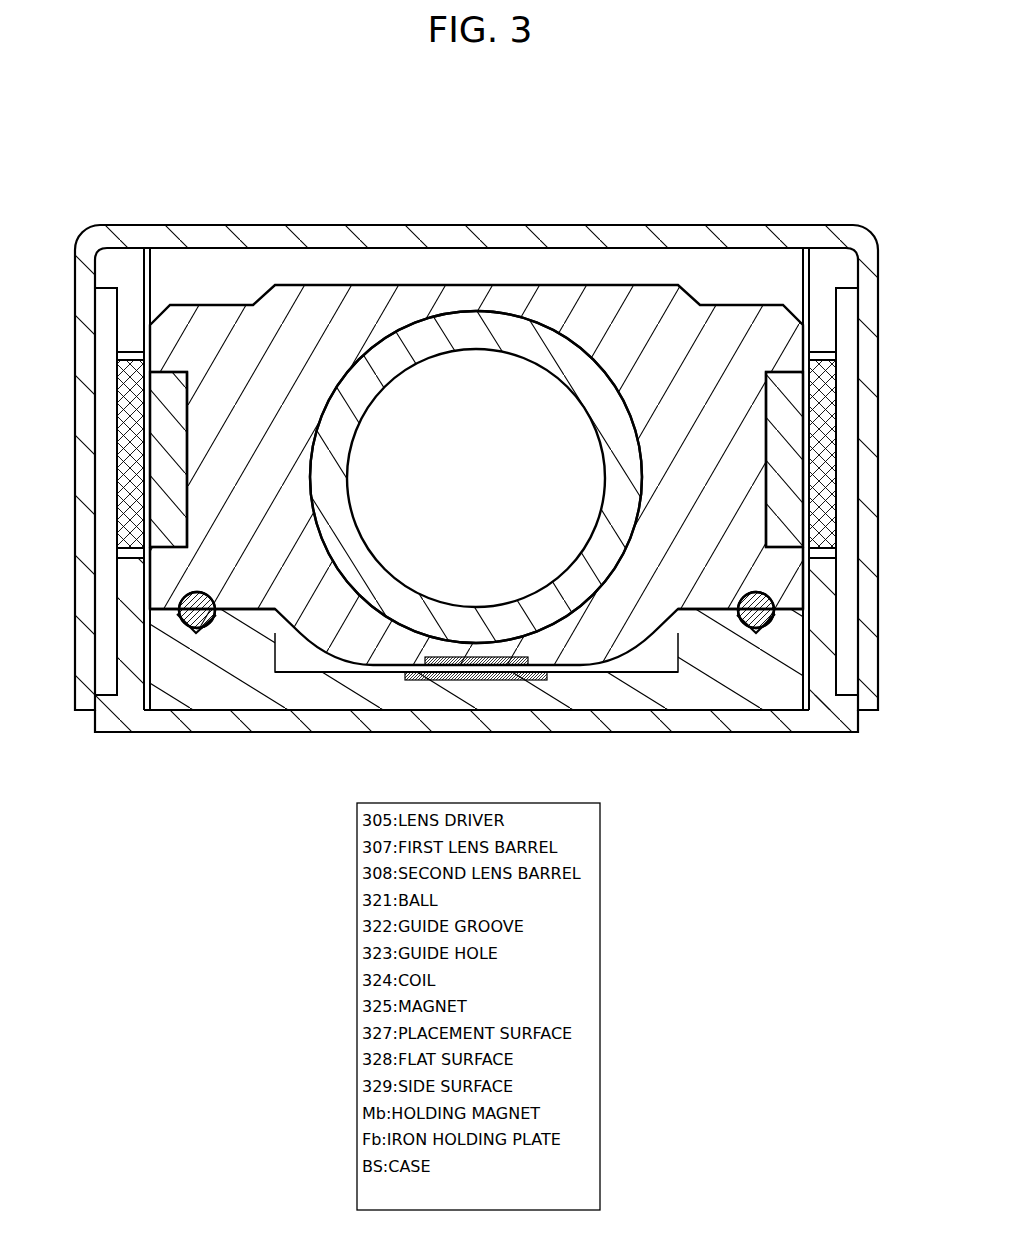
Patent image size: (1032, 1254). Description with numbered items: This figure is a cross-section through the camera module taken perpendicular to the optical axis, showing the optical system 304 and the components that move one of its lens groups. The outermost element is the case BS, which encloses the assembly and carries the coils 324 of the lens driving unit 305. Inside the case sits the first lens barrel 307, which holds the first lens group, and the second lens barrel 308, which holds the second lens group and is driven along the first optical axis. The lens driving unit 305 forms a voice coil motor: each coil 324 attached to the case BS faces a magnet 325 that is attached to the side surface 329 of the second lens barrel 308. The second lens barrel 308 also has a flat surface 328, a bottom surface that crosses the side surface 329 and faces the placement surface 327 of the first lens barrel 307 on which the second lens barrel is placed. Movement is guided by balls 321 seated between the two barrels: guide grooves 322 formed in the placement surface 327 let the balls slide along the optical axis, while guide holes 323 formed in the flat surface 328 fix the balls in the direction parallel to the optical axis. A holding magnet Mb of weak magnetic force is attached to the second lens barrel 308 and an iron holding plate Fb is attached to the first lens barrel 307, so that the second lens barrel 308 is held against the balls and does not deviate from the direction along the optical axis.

The optical system 304 is at (700, 157).
The lens driving unit 305 is at (70, 335).
The first lens barrel 307 is at (760, 682).
The second lens barrel 308 is at (593, 642).
The ball 321 is at (179, 619).
The guide groove 322 is at (192, 631).
The guide hole 323 is at (178, 604).
The coil 324 is at (127, 352).
The magnet 325 is at (170, 387).
The placement surface 327 is at (228, 603).
The flat surface 328 is at (260, 612).
The side surface 329 is at (150, 570).
The holding magnet Mb is at (453, 666).
The iron holding plate Fb is at (498, 681).
The case BS is at (837, 272).